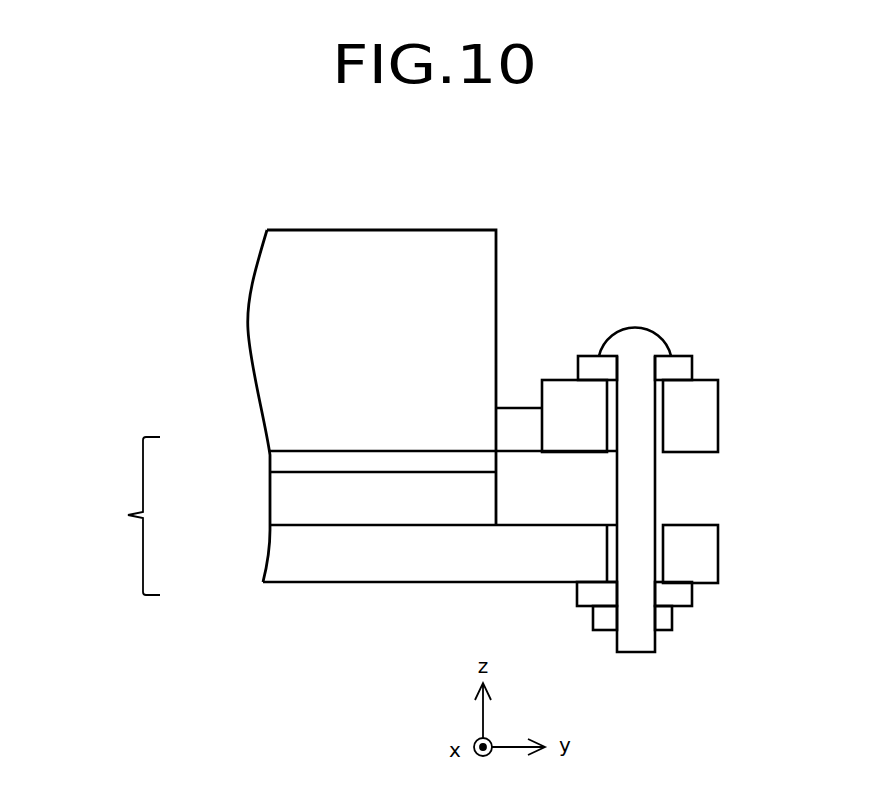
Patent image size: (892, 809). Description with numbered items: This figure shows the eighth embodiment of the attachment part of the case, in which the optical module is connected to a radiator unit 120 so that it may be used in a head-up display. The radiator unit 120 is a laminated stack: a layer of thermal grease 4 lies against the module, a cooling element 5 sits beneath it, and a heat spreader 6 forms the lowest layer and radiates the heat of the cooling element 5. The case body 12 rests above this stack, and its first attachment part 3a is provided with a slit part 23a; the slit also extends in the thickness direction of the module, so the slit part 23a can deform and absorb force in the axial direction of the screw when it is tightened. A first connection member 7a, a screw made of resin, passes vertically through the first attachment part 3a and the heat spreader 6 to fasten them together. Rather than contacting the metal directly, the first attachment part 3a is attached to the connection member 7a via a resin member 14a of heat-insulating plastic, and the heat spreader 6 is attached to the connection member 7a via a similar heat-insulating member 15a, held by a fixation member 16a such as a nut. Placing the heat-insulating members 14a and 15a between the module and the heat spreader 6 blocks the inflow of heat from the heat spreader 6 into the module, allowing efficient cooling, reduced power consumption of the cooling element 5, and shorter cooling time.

The housing block 12 is at (467, 248).
The slit part 23a is at (508, 425).
The resin member 14a is at (680, 370).
The first attachment part 3a is at (707, 415).
The first connection member 7a is at (643, 508).
The member 15a is at (675, 592).
The fixation member 16a is at (660, 622).
The thermal grease 4 is at (290, 461).
The cooling element 5 is at (293, 507).
The heat spreader 6 is at (293, 557).
The radiator unit 120 is at (118, 516).